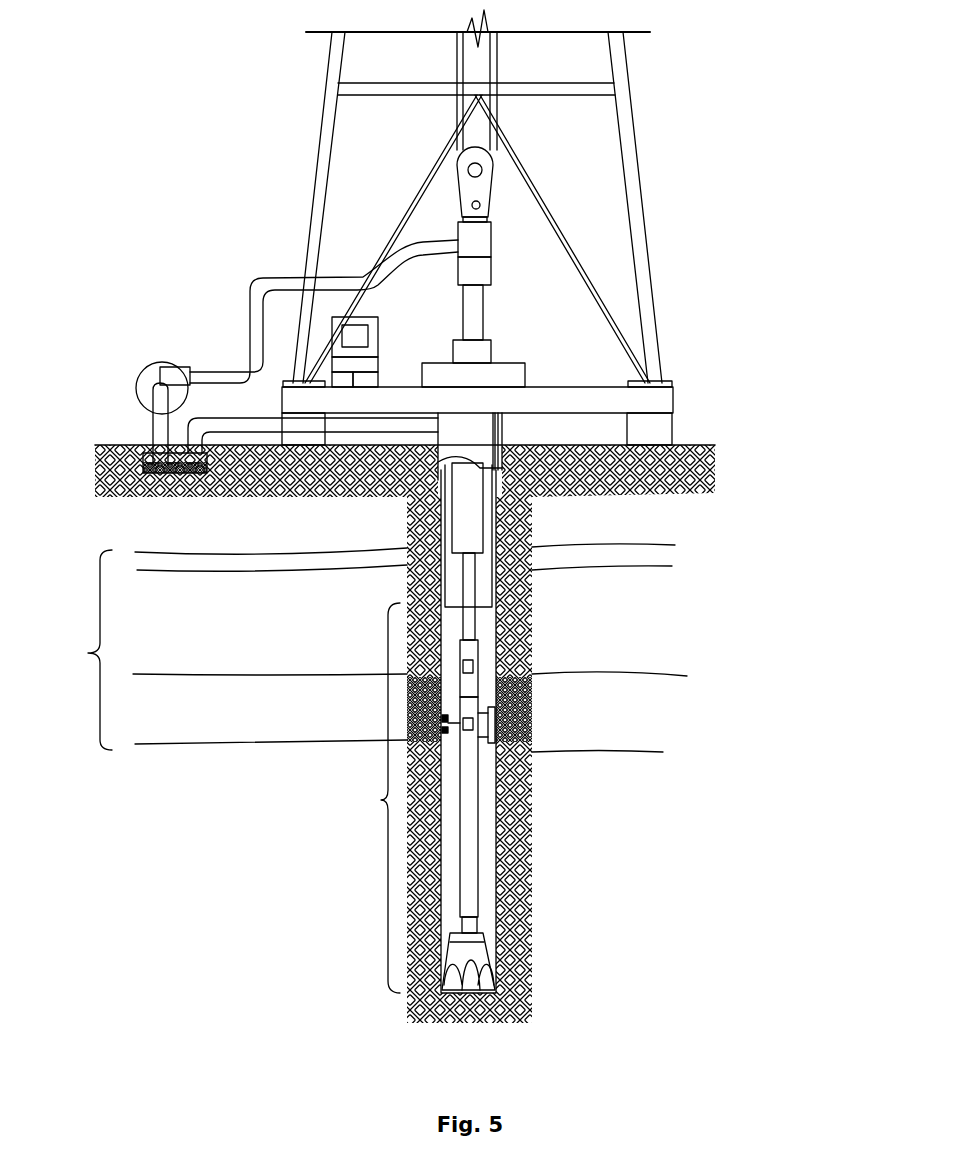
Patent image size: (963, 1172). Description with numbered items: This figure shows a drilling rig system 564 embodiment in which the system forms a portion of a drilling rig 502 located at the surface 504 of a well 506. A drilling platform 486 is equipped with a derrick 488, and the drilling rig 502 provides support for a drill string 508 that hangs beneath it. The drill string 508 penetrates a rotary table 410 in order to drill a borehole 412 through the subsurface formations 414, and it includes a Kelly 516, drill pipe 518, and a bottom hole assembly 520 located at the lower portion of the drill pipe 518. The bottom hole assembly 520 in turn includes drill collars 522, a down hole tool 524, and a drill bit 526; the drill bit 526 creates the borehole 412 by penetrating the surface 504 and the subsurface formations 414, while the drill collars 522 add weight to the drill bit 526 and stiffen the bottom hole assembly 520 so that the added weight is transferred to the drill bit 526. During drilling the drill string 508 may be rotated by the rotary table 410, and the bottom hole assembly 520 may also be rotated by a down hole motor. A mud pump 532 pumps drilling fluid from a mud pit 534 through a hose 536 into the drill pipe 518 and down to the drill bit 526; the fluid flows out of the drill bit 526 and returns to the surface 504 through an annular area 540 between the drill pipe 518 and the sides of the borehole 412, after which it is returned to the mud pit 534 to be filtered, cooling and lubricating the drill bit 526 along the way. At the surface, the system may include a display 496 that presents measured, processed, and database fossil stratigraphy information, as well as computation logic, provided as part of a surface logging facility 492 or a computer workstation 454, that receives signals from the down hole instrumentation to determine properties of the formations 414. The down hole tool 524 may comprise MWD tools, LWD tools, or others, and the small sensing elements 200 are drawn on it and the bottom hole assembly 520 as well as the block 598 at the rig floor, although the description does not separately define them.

The drilling rig system 564 is at (238, 140).
The derrick 488 is at (628, 108).
The drilling rig 502 is at (660, 198).
The Kelly 516 is at (483, 305).
The rotary table 598 is at (491, 350).
The rotary table 410 is at (437, 364).
The drilling platform 486 is at (673, 393).
The surface 504 is at (720, 444).
The bottom hole assembly 520 is at (427, 760).
The subsurface formations 414 is at (362, 648).
The borehole 412 is at (500, 862).
The well 506 is at (515, 437).
The hose 536 is at (262, 278).
The mud pump 532 is at (162, 366).
The mud pit 534 is at (165, 475).
The computer workstation 454 is at (380, 328).
The display 496 is at (368, 337).
The surface logging facility 492 is at (375, 305).
The drill collars 522 is at (485, 515).
The drill pipe 518 is at (470, 580).
The annular area 540 is at (490, 645).
The drill string 508 is at (497, 810).
The sensor 200 is at (475, 668).
The down hole tool 524 is at (470, 900).
The drill bit 526 is at (476, 955).